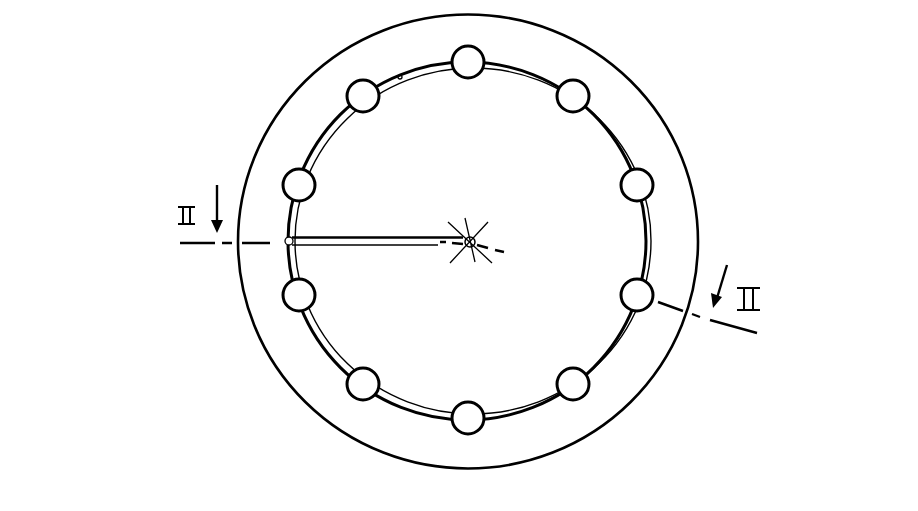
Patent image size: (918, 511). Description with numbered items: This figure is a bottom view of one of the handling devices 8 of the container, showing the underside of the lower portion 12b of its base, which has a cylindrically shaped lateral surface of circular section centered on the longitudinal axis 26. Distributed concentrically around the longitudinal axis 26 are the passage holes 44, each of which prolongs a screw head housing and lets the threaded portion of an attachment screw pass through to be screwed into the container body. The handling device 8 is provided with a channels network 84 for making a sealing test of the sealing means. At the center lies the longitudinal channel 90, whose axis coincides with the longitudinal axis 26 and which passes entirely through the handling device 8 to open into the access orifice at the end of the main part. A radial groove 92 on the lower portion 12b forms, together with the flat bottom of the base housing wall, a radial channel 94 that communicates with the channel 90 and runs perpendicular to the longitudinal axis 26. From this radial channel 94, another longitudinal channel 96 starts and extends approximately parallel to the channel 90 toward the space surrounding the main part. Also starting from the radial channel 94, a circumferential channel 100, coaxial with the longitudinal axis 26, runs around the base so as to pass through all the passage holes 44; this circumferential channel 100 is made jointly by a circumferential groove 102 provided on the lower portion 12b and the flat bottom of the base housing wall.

The handling device 8 is at (636, 64).
The lower portion 12b is at (325, 395).
The channels network 84 is at (656, 232).
The circumferential channel 100 is at (407, 68).
The circumferential groove 102 is at (328, 160).
The passage hole 44 is at (578, 100).
The radial groove 92 is at (328, 246).
The radial channel 94 is at (400, 244).
The longitudinal channel 96 is at (288, 243).
The longitudinal axis 26 is at (471, 230).
The longitudinal channel 90 is at (471, 253).